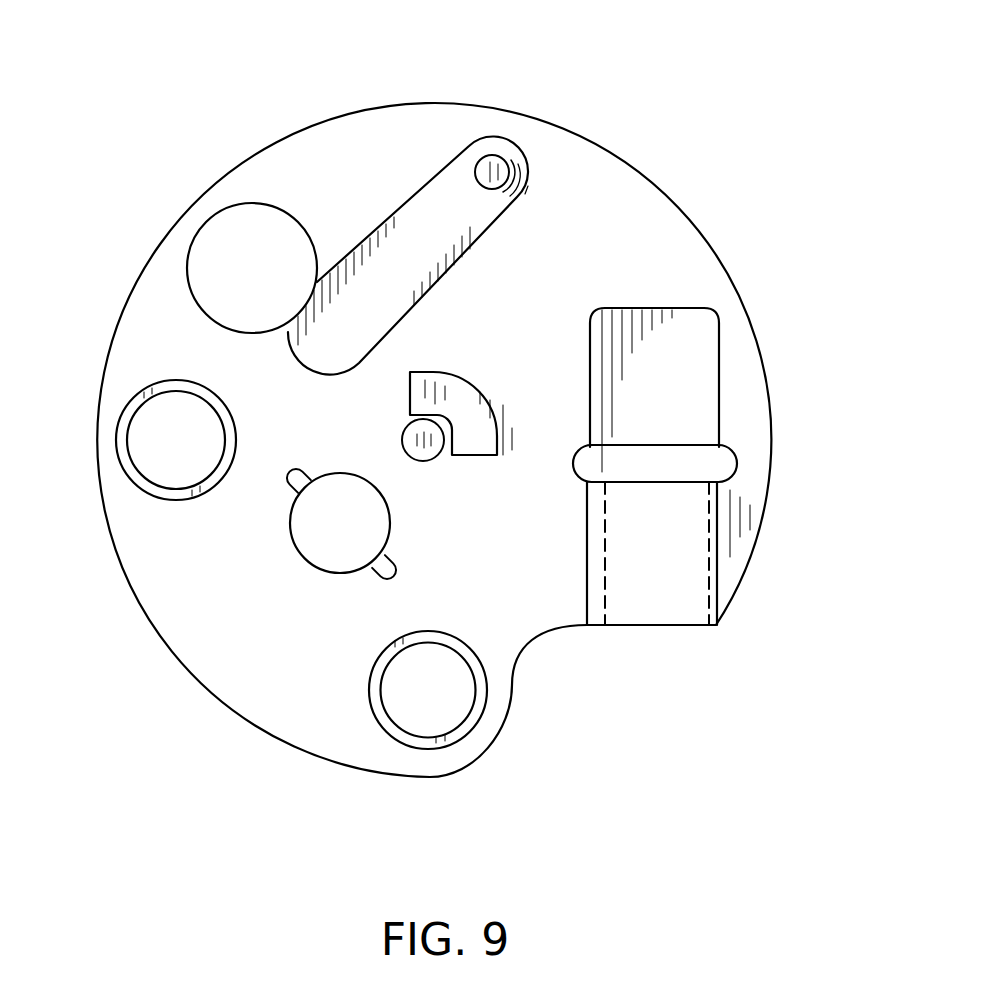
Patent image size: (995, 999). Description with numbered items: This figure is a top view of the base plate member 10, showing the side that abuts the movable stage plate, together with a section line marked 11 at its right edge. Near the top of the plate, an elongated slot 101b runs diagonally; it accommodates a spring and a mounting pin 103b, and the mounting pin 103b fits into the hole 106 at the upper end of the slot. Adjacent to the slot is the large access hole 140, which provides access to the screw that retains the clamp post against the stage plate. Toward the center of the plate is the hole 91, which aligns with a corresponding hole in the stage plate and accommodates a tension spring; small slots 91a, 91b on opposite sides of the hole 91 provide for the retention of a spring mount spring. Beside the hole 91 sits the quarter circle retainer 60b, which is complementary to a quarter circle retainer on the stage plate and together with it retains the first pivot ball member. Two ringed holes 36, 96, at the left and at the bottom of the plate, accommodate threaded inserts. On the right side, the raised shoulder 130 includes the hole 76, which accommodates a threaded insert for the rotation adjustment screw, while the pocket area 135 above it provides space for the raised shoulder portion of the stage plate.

The base plate member 10 is at (643, 196).
The section line 11- 11 is at (876, 777).
The hole 36 is at (378, 718).
The quarter circle retainer 60b is at (455, 387).
The hole 76 is at (605, 597).
The hole 91 is at (392, 513).
The slot 91a is at (300, 467).
The slot 91b is at (392, 565).
The hole 96 is at (131, 483).
The slot 101b is at (403, 204).
The mounting pin 103b is at (488, 158).
The hole 106 is at (508, 162).
The raised shoulder 130 is at (672, 564).
The pocket area 135 is at (683, 413).
The access hole 140 is at (190, 247).